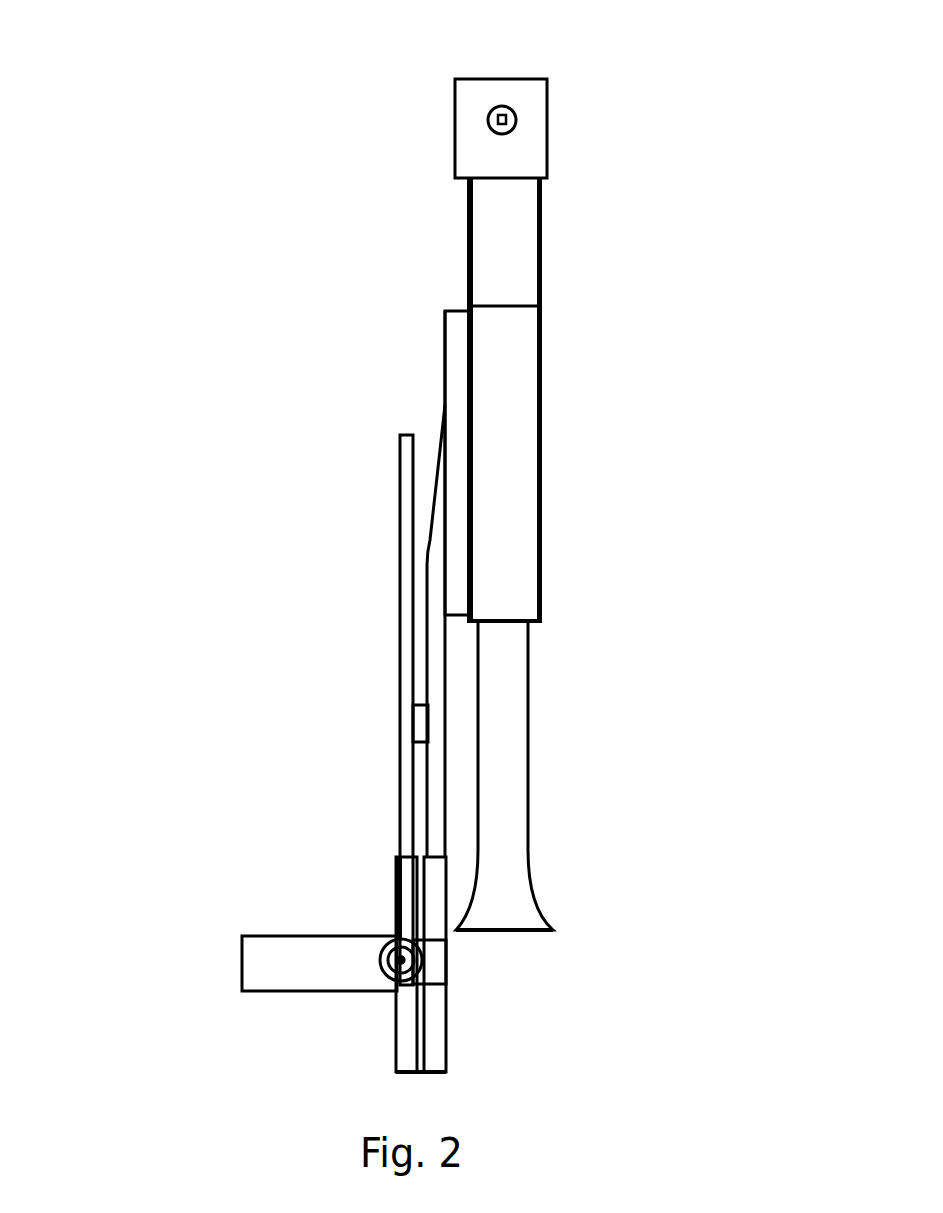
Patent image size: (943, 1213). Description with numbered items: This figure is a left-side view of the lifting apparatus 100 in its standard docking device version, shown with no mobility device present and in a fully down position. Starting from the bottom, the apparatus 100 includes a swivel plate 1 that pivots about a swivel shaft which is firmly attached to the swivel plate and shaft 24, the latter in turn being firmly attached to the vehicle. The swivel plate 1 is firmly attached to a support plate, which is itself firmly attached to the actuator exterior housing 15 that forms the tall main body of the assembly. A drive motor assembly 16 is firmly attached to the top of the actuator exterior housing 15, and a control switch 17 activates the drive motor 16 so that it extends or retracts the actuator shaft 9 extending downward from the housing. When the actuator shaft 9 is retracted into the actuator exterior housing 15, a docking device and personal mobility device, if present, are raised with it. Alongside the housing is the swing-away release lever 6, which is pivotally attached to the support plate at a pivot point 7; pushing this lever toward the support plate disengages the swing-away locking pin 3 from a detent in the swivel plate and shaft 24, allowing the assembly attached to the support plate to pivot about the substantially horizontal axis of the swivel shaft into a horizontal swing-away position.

The lifting apparatus 100 is at (236, 60).
The swivel plate 1 is at (437, 1023).
The swing-away locking pin 3 is at (413, 958).
The swing-away release lever 6 is at (407, 822).
The pivot point 7 is at (397, 722).
The actuator shaft 9 is at (515, 790).
The actuator exterior housing 15 is at (517, 422).
The drive motor assembly 16 is at (505, 270).
The control switch 17 is at (515, 123).
The swivel plate and shaft 24 is at (408, 1033).